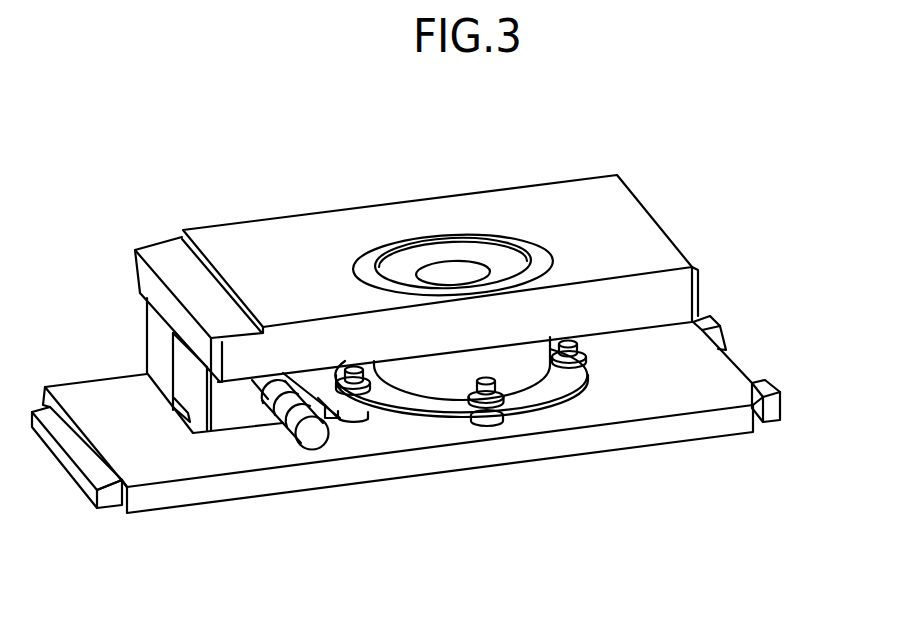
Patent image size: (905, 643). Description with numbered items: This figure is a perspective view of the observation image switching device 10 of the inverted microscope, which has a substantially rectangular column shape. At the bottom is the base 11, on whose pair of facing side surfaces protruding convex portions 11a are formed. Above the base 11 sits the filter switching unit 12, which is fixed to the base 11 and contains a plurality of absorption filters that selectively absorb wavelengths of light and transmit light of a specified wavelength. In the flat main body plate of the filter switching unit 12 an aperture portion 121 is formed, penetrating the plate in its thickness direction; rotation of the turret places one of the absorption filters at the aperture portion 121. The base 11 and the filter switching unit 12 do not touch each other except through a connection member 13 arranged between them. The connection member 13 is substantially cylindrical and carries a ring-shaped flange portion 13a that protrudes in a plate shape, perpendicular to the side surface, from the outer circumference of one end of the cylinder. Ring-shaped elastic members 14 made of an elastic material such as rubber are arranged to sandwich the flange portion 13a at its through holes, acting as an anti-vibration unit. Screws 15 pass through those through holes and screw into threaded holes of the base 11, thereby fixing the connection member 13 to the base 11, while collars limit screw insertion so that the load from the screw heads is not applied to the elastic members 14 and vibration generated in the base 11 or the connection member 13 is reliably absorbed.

The observation image switching device 10 is at (465, 157).
The base 11 is at (250, 484).
The convex portions 11a is at (113, 498).
The filter switching unit 12 is at (570, 197).
The aperture portion 121 is at (431, 265).
The connection member 13 is at (412, 383).
The flange portion 13a is at (442, 413).
The elastic members 14 is at (483, 413).
The screws 15 is at (503, 385).